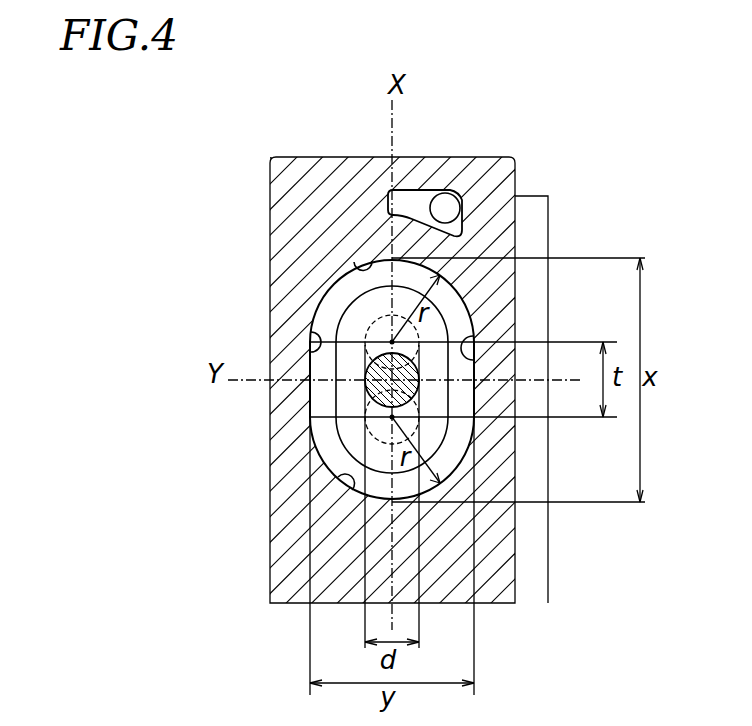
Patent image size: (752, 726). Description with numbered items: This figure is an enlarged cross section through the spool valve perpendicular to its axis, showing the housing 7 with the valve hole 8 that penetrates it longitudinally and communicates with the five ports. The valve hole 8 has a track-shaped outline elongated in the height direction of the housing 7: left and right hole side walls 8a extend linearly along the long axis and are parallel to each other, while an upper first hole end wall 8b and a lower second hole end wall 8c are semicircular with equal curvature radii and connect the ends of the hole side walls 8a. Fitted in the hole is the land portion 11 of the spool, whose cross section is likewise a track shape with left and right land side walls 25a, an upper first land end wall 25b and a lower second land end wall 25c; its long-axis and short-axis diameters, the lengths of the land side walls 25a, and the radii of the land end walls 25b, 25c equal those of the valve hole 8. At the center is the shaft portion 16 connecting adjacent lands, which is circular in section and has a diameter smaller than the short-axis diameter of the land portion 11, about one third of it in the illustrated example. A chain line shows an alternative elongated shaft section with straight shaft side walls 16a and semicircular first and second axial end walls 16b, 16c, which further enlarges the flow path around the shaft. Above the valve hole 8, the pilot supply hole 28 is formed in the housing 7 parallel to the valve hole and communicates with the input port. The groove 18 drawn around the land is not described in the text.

The housing 7 is at (477, 190).
The valve hole 8 is at (512, 236).
The hole side walls 8a is at (314, 336).
The first hole end wall 8b is at (368, 257).
The second hole end wall 8c is at (345, 493).
The land portion 11 is at (350, 432).
The shaft portions 16 is at (373, 362).
The shaft side walls 16a is at (363, 400).
The first axial end wall 16b is at (370, 322).
The second axial end wall 16c is at (388, 445).
The annular groove 18 is at (330, 316).
The land side walls 25a is at (308, 390).
The first land end wall 25b is at (323, 299).
The second land end wall 25c is at (358, 495).
The pilot supply hole 28 is at (417, 203).